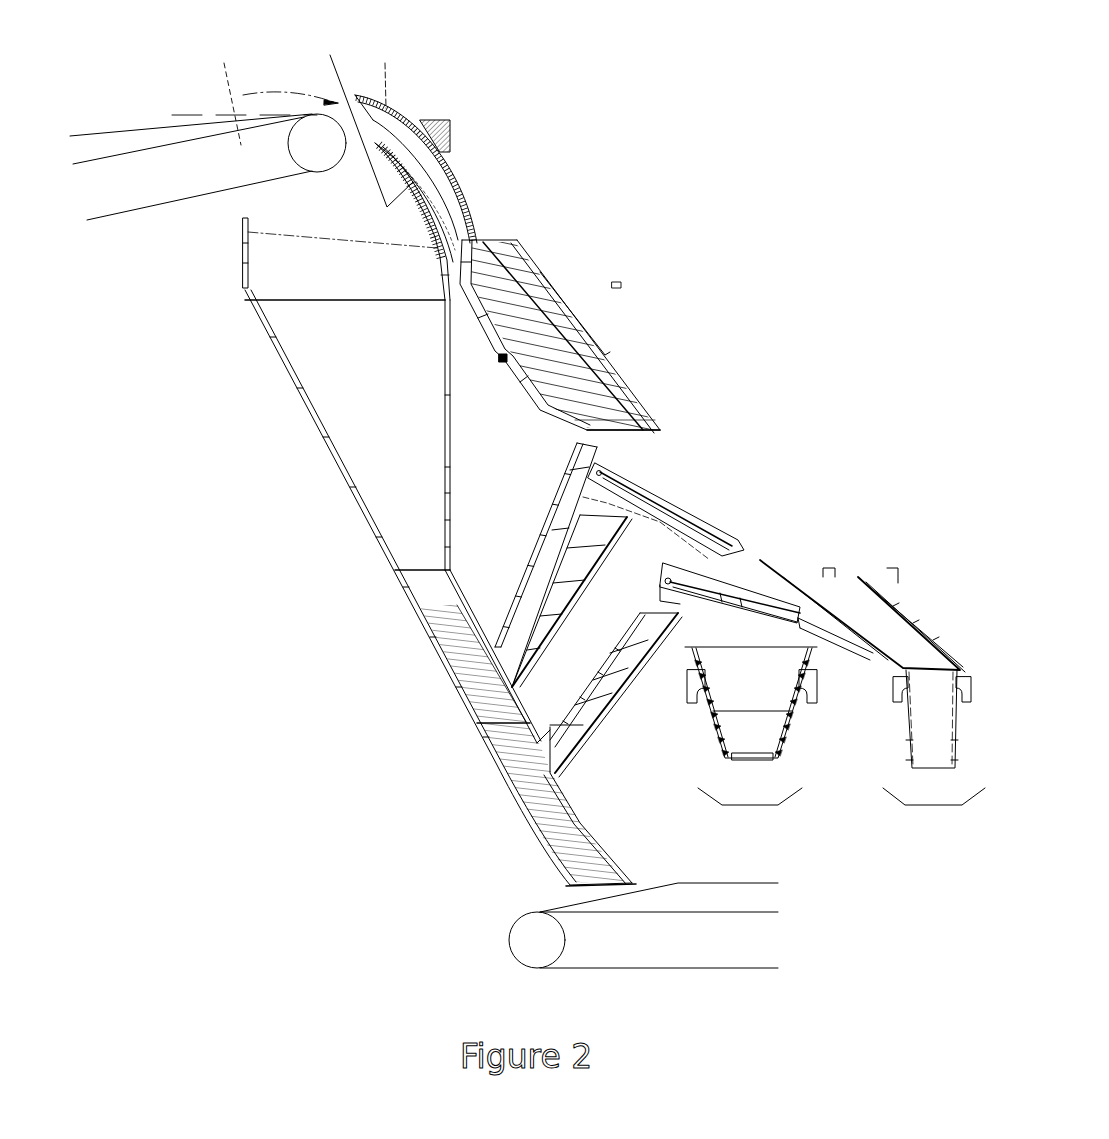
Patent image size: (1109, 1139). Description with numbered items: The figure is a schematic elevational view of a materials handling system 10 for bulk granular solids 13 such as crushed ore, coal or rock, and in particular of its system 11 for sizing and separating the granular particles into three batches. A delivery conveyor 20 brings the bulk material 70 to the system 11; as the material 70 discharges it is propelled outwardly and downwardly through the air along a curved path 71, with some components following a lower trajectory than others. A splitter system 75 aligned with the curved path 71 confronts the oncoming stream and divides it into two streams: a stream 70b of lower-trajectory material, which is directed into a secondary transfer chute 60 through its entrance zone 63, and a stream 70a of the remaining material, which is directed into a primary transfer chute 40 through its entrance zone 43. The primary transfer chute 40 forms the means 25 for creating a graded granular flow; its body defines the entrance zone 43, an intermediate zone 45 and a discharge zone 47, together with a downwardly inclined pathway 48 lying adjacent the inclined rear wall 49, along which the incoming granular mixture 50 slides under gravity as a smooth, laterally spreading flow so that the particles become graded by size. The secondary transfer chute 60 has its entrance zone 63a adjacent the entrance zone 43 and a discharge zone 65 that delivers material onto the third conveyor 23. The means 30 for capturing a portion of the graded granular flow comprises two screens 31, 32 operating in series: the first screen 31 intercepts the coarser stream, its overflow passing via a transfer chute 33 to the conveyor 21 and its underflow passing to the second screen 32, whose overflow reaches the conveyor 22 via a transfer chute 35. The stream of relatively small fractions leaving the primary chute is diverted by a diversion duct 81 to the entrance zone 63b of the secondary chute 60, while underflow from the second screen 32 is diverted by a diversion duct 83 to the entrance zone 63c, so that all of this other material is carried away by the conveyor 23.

The materials handling system 10 is at (780, 134).
The system for sizing and separating granular particles 11 is at (651, 171).
The bulk granular solids 13 is at (210, 103).
The delivery conveyor 20 is at (208, 140).
The conveyor 21 is at (873, 726).
The conveyor 22 is at (776, 896).
The third conveyor 23 is at (602, 925).
The means for creating a graded granular flow 25 is at (689, 231).
The means for capturing a portion of the graded granular flow 30 is at (769, 437).
The first screen 31 is at (663, 477).
The second screen 32 is at (730, 566).
The transfer chute 33 is at (894, 602).
The transfer chute 35 is at (777, 753).
The primary transfer chute 40 is at (632, 372).
The entrance zone 43 is at (560, 308).
The intermediate zone 45 is at (583, 351).
The discharge zone 47 is at (640, 396).
The pathway 48 is at (585, 333).
The rear wall 49 is at (375, 421).
The granular mixture 50 is at (489, 204).
The secondary transfer chute 60 is at (605, 682).
The entrance zone 63 is at (378, 532).
The entrance zone 63a is at (306, 268).
The entrance zone 63b is at (447, 685).
The entrance zone 63c is at (524, 806).
The discharge zone 65 is at (543, 884).
The bulk material 70 is at (469, 176).
The stream 70a is at (449, 169).
The stream 70b is at (479, 213).
The curved path 71 is at (273, 57).
The splitter system 75 is at (330, 55).
The diversion duct 81 is at (457, 565).
The diversion duct 83 is at (548, 695).